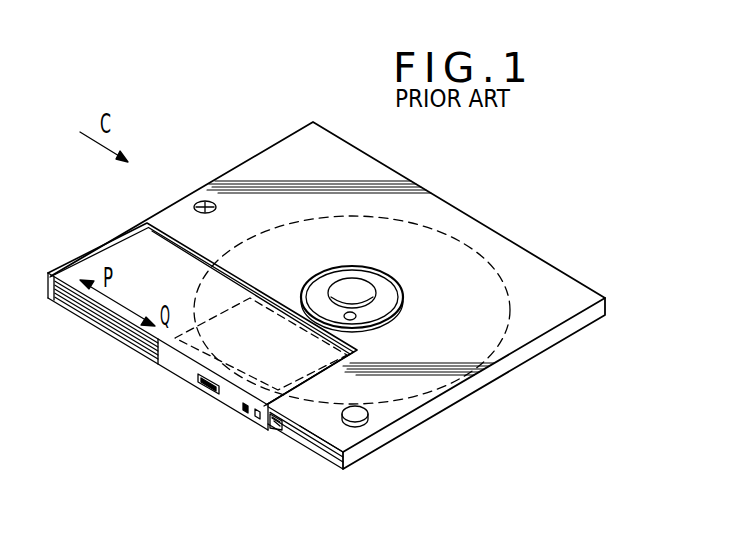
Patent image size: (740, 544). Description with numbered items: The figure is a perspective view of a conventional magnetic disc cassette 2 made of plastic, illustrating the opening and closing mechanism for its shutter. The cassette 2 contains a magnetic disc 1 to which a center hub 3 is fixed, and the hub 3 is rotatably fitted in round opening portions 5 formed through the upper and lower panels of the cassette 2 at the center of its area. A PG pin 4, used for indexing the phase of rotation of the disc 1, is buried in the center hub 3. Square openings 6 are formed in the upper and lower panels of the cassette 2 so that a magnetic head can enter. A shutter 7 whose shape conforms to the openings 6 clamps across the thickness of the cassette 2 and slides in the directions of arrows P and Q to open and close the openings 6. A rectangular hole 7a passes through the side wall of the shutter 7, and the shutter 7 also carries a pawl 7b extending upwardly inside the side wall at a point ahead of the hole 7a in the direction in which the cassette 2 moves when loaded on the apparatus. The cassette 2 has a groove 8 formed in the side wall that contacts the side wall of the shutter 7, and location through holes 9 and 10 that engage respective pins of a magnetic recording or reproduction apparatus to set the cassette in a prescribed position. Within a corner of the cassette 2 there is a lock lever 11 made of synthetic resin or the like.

The magnetic disc 1 is at (427, 235).
The magnetic disc cassette 2 is at (545, 278).
The center hub 3 is at (348, 292).
The PG pin 4 is at (357, 318).
The round opening portions 5 is at (303, 297).
The square openings 6 is at (273, 312).
The shutter 7 is at (168, 362).
The rectangular hole 7a is at (207, 392).
The pawl 7b is at (248, 413).
The groove 8 is at (327, 457).
The location through hole 9 is at (363, 428).
The location through hole 10 is at (203, 201).
The lock lever 11 is at (282, 430).